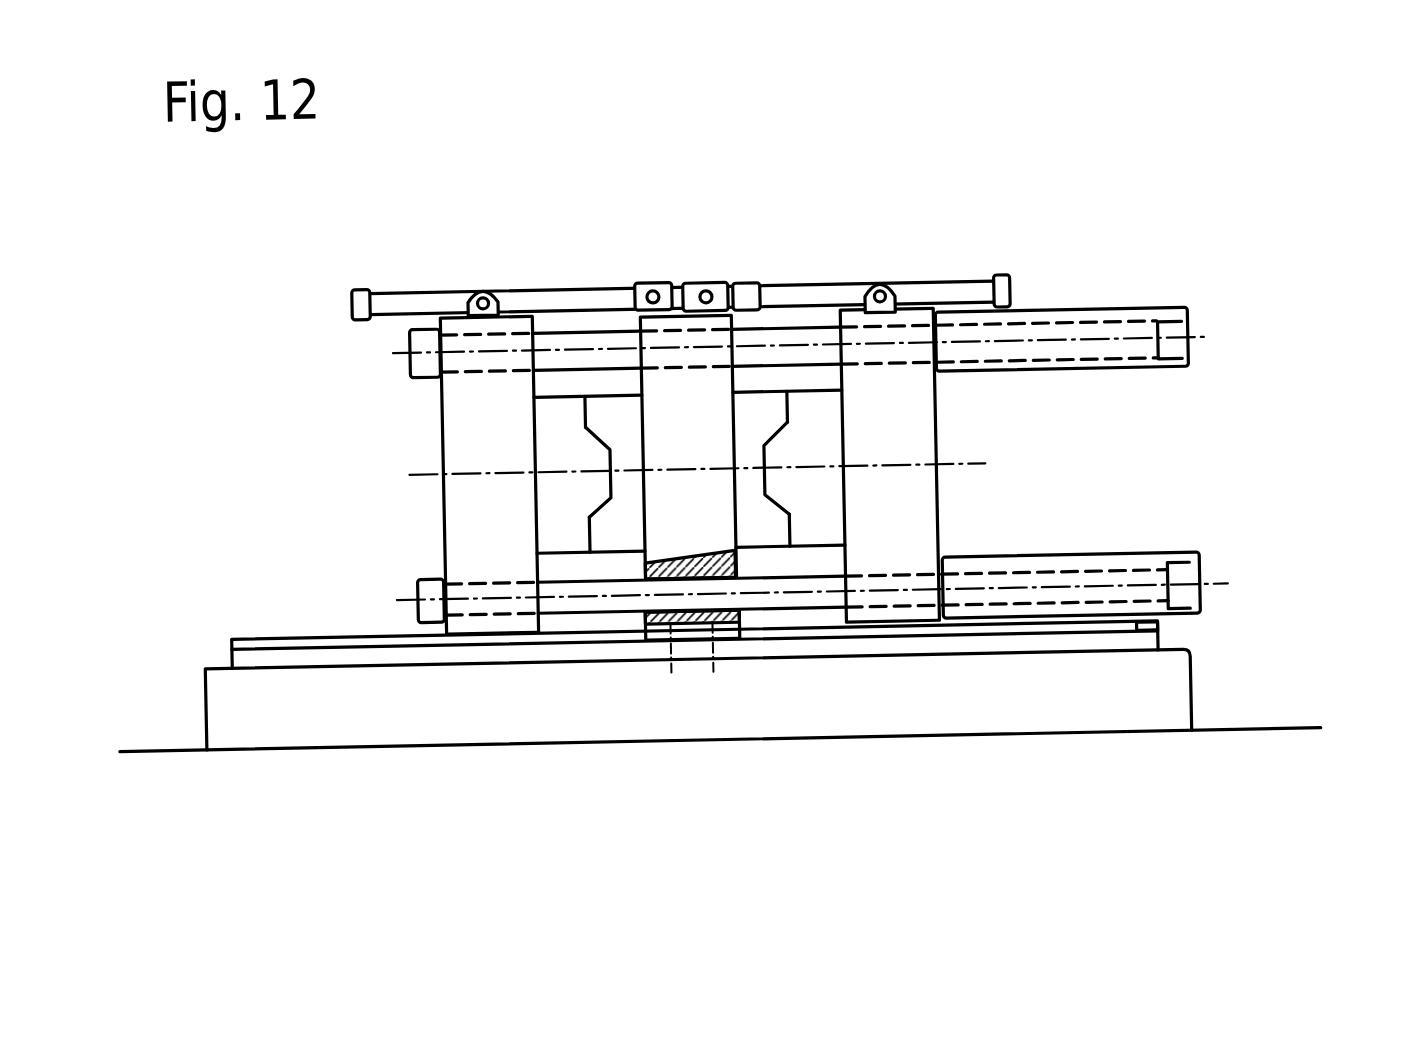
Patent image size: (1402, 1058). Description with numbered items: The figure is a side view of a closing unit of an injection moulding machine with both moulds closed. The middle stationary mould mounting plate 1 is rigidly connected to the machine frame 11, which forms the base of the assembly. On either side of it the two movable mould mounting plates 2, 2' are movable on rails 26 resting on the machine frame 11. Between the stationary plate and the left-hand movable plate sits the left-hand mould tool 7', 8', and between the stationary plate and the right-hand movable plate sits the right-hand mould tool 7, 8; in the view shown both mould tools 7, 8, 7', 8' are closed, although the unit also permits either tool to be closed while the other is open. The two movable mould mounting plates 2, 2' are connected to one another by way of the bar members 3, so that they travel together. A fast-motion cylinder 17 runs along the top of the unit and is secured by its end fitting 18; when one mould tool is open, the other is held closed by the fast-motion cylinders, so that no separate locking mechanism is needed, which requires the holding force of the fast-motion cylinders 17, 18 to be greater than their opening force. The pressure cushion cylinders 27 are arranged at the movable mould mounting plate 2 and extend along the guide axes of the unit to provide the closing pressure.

The middle stationary mould mounting plate 1 is at (660, 494).
The movable mould mounting plate 2 is at (1083, 462).
The movable mould mounting plate 2' is at (380, 477).
The bar members 3 is at (628, 596).
The mould tool 7 is at (772, 353).
The mould tool 7' is at (603, 347).
The mould tool 8 is at (801, 353).
The mould tool 8' is at (582, 347).
The machine frame 11 is at (1153, 696).
The fast-motion cylinder 17 is at (356, 283).
The fast-motion cylinder 18 is at (1014, 283).
The rails 26 is at (1157, 637).
The pressure cushion cylinders 27 is at (1192, 322).